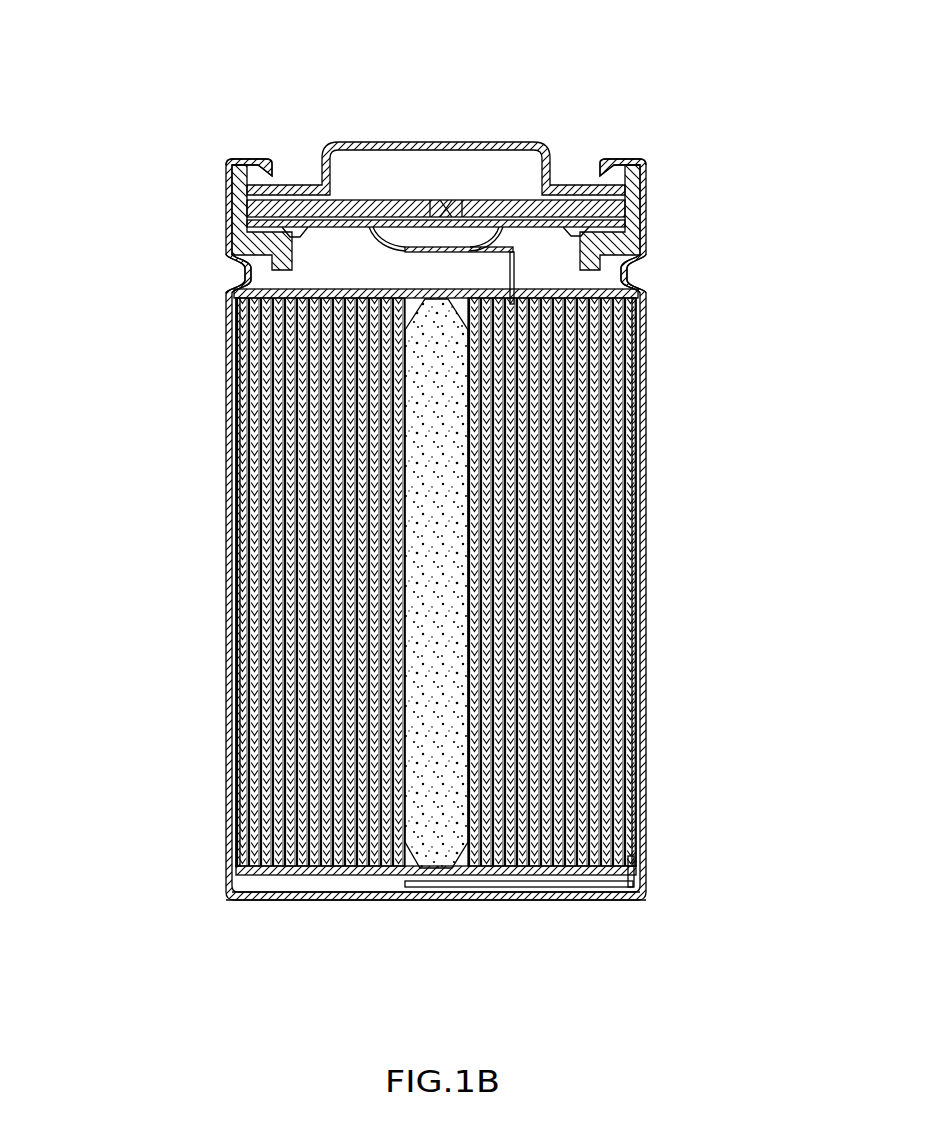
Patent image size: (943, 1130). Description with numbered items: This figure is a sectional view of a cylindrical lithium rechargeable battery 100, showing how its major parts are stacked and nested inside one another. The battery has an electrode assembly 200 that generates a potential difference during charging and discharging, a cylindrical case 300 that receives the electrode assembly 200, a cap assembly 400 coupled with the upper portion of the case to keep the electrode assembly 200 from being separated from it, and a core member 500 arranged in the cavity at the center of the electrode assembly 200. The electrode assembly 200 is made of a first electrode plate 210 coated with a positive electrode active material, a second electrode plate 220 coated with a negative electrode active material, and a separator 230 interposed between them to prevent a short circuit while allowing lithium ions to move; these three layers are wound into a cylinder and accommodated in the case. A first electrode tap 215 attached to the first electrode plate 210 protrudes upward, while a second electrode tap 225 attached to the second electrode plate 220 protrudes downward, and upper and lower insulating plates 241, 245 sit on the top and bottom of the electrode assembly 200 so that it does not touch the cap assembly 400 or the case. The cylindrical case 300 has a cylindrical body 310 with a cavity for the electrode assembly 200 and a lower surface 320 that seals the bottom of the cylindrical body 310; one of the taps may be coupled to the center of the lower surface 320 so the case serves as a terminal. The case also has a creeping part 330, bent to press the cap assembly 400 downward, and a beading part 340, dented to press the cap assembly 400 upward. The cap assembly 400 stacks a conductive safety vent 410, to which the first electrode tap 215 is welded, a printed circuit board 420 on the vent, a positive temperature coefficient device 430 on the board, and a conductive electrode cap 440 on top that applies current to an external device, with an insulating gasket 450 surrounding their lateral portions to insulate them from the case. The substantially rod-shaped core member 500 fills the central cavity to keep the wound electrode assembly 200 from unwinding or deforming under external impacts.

The cylindrical lithium rechargeable battery 100 is at (686, 116).
The electrode assembly 200 is at (770, 272).
The first electrode plate 210 is at (612, 430).
The first electrode tap 215 is at (622, 271).
The second electrode plate 220 is at (640, 348).
The second electrode tap 225 is at (535, 895).
The separator 230 is at (622, 395).
The upper insulating plate 241 is at (633, 294).
The lower insulating plate 245 is at (641, 868).
The cylindrical case 300 is at (95, 243).
The cylindrical body 310 is at (228, 340).
The lower surface 320 is at (265, 893).
The creeping part 330 is at (222, 163).
The beading part 340 is at (240, 270).
The cap assembly 400 is at (585, 50).
The conductive safety vent 410 is at (401, 203).
The printed circuit board 420 is at (466, 214).
The positive temperature coefficient device 430 is at (519, 199).
The conductive electrode cap 440 is at (347, 145).
The insulating gasket 450 is at (603, 172).
The core member 500 is at (440, 876).